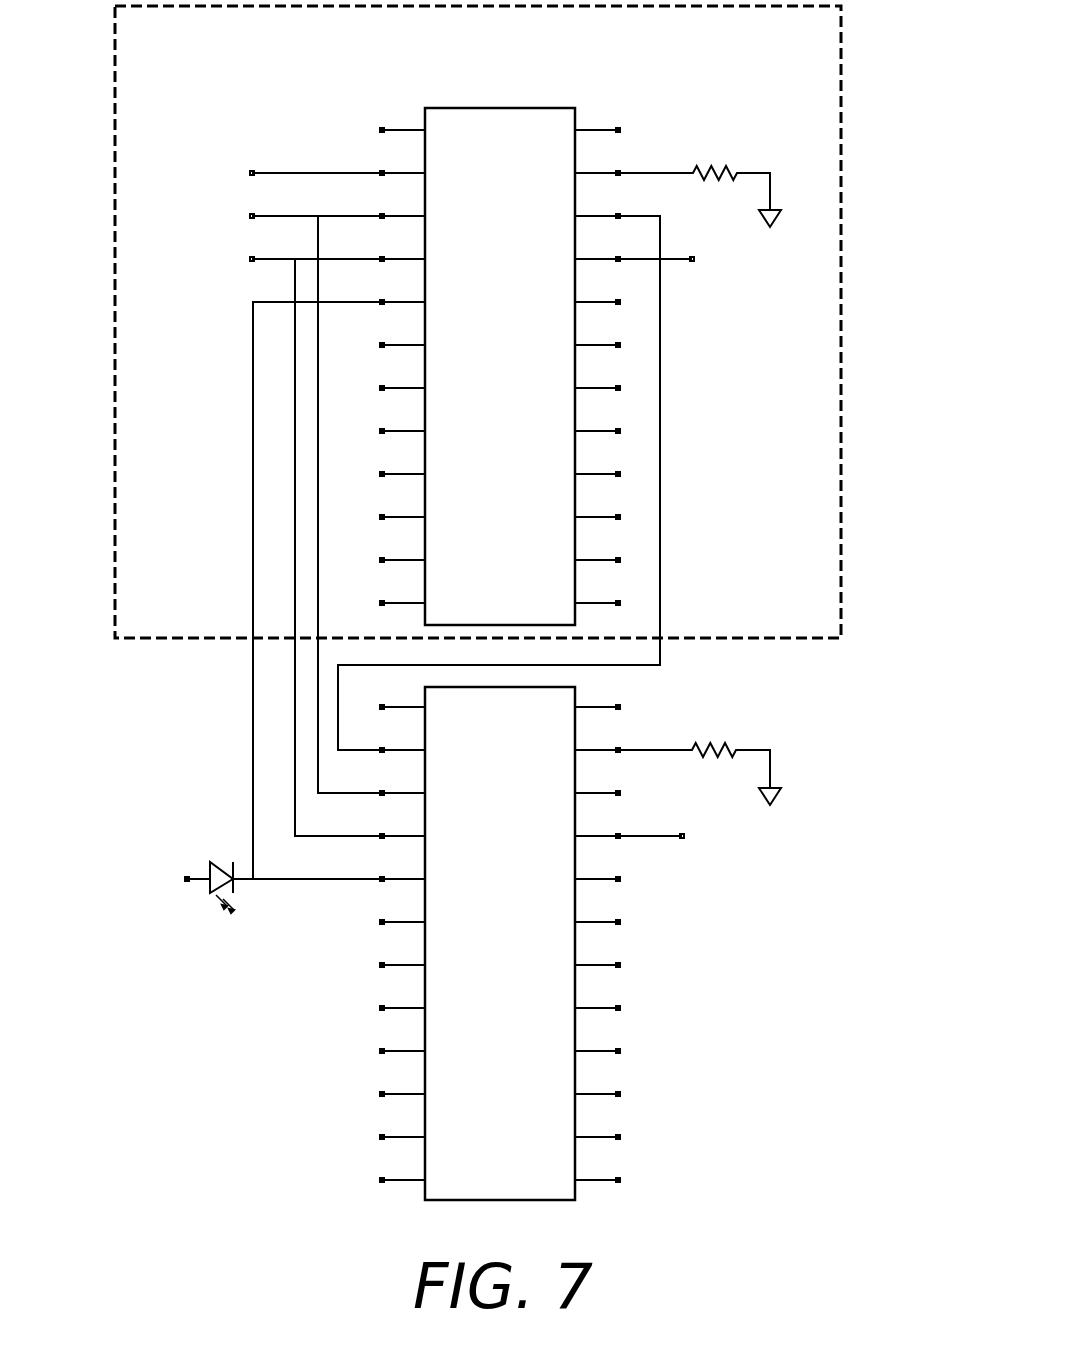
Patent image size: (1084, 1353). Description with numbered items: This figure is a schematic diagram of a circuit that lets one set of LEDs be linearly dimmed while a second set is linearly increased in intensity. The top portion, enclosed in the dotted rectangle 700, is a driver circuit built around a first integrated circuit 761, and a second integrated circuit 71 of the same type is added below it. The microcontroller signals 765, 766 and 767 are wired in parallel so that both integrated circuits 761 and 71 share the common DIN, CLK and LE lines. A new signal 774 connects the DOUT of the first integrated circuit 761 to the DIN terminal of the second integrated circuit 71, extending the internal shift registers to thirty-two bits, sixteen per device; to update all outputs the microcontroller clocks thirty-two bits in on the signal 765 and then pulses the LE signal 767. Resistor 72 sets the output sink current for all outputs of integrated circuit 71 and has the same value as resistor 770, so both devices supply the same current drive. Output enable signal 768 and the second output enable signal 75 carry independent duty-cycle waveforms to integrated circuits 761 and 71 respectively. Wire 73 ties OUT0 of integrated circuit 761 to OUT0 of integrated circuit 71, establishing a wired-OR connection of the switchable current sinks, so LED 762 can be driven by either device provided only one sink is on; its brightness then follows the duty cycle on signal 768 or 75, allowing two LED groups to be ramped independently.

The dotted rectangle 700 is at (228, 640).
The integrated circuit 761 is at (575, 615).
The second integrated circuit 71 is at (577, 1191).
The microcontroller signal 765 is at (288, 168).
The microcontroller signal 766 is at (285, 212).
The microcontroller signal 767 is at (282, 255).
The wire 73 is at (253, 795).
The new signal 774 is at (642, 665).
The output enable signal 768 is at (672, 262).
The second output enable signal 75 is at (640, 837).
The resistor 770 is at (728, 172).
The resistor 72 is at (733, 740).
The LED 762 is at (200, 885).